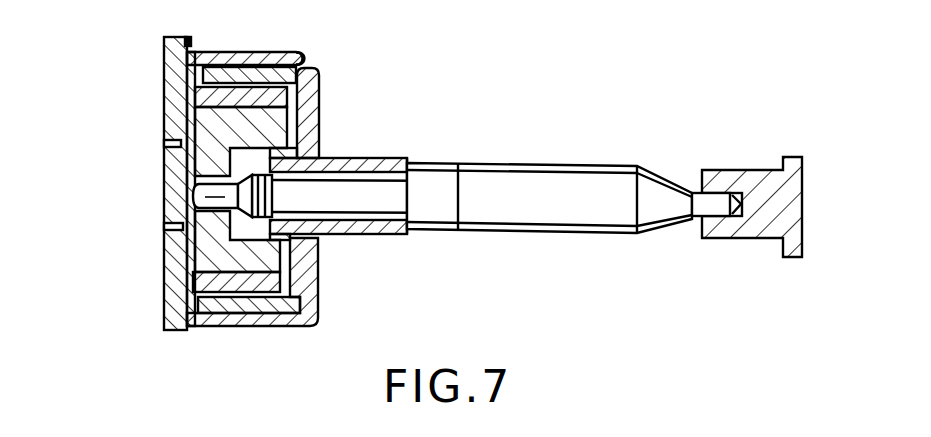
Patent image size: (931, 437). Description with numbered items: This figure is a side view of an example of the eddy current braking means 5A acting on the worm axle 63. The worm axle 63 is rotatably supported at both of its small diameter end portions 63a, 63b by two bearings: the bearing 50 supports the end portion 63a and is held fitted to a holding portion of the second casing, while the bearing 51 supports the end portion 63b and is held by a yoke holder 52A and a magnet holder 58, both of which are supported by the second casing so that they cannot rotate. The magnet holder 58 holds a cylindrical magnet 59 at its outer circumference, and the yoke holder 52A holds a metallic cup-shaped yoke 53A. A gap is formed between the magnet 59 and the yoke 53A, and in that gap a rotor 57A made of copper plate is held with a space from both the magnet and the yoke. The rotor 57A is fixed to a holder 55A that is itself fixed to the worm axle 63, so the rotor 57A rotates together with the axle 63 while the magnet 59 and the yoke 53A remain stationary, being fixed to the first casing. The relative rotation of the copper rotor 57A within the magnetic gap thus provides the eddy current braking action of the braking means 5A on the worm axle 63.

The bearing 50 is at (748, 227).
The bearing 51 is at (170, 220).
The yoke holder 52A is at (167, 65).
The yoke 53A is at (243, 52).
The holder 55A is at (317, 124).
The rotor 57A is at (304, 64).
The magnet holder 58 is at (163, 143).
The magnet 59 is at (262, 278).
The worm axle 63 is at (573, 183).
The small diameter end portion 63a is at (700, 202).
The small diameter end portion 63b is at (193, 190).
The braking means 5A is at (473, 122).